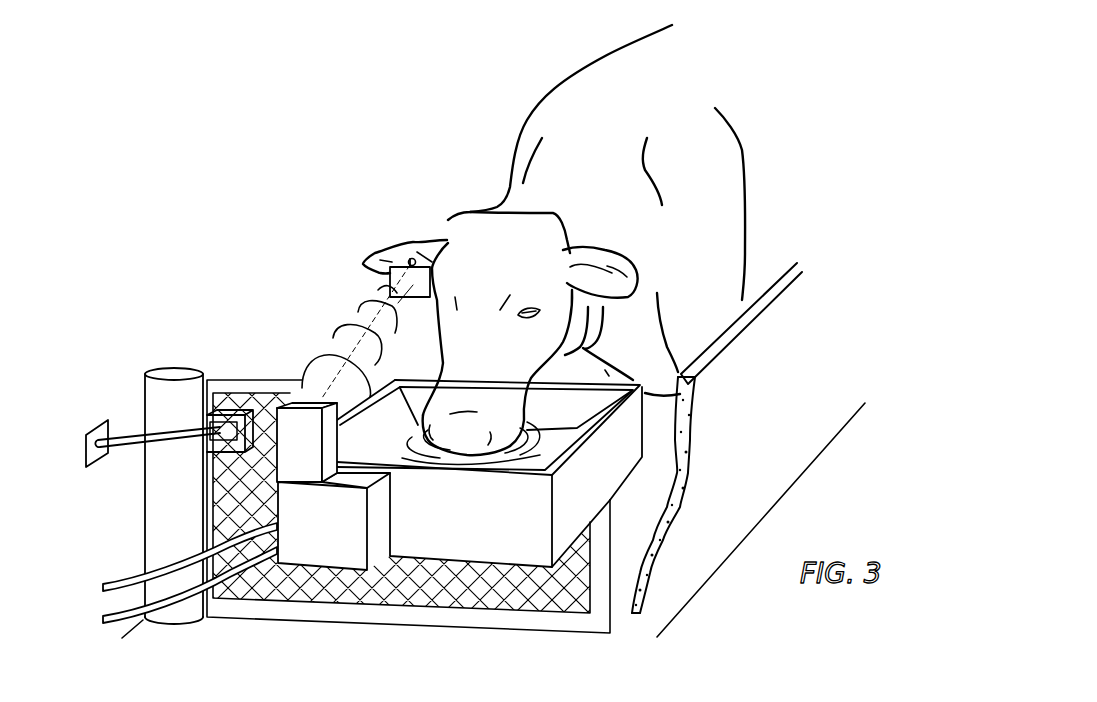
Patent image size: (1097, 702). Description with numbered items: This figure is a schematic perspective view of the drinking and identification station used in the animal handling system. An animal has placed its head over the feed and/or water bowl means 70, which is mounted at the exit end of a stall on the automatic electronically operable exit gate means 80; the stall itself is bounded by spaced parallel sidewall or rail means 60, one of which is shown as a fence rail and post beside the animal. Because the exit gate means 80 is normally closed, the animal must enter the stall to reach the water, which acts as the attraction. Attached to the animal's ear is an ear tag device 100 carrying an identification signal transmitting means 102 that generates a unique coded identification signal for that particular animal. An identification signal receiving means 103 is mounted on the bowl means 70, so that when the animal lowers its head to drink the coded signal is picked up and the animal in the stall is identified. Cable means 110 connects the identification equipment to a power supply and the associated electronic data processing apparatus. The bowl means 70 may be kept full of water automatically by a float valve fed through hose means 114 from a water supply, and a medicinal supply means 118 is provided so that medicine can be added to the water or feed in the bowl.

The sidewall or rail means 60 is at (800, 442).
The feed and/or water bowl means 70 is at (623, 447).
The exit gate means 80 is at (613, 540).
The ear tag device 100 is at (390, 295).
The identification signal transmitting means 102 is at (407, 262).
The identification signal receiving means 103 is at (305, 402).
The cable means 110 is at (127, 580).
The hose means 114 is at (184, 610).
The medicinal supply means 118 is at (382, 530).